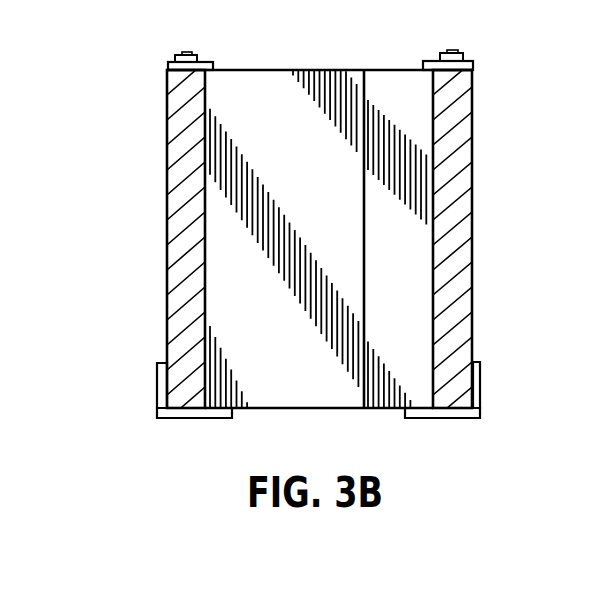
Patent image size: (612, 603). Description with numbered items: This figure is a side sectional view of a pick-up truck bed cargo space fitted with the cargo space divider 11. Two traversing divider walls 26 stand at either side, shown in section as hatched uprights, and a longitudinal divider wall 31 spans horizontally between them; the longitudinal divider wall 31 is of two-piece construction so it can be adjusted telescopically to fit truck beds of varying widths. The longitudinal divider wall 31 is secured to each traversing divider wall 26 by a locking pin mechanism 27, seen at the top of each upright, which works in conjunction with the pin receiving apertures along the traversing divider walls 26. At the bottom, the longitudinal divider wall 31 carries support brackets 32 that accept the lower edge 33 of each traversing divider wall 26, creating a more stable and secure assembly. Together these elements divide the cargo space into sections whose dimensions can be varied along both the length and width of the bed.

The cargo space divider 11 is at (88, 48).
The traversing divider wall 26 is at (174, 203).
The locking pin mechanism 27 is at (193, 52).
The longitudinal divider wall 31 is at (257, 71).
The support bracket 32 is at (162, 389).
The lower edge 33 is at (190, 418).